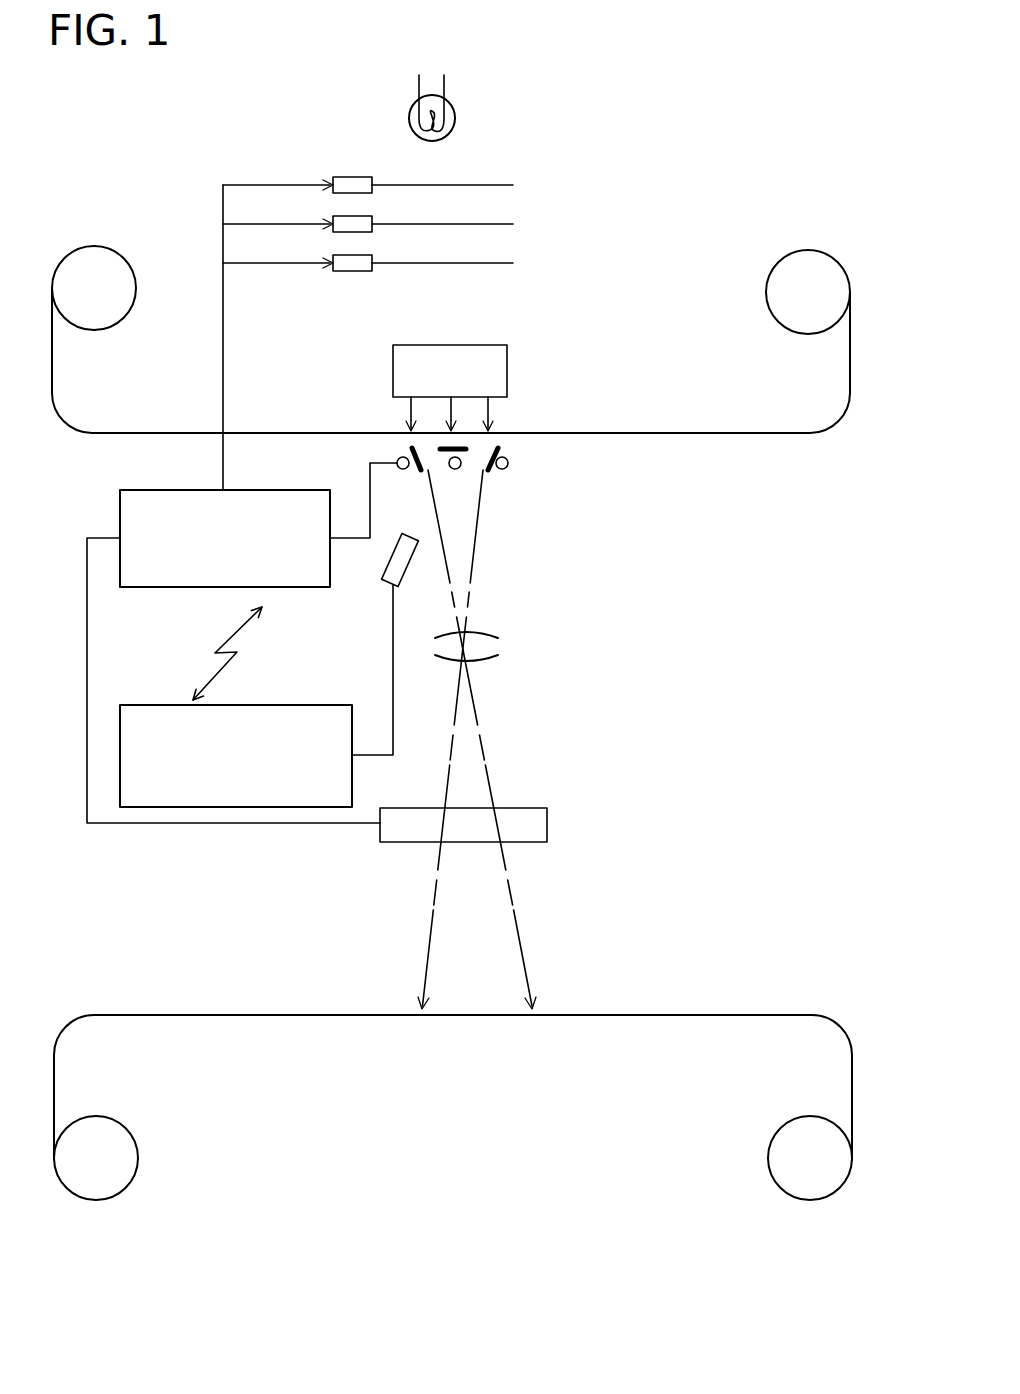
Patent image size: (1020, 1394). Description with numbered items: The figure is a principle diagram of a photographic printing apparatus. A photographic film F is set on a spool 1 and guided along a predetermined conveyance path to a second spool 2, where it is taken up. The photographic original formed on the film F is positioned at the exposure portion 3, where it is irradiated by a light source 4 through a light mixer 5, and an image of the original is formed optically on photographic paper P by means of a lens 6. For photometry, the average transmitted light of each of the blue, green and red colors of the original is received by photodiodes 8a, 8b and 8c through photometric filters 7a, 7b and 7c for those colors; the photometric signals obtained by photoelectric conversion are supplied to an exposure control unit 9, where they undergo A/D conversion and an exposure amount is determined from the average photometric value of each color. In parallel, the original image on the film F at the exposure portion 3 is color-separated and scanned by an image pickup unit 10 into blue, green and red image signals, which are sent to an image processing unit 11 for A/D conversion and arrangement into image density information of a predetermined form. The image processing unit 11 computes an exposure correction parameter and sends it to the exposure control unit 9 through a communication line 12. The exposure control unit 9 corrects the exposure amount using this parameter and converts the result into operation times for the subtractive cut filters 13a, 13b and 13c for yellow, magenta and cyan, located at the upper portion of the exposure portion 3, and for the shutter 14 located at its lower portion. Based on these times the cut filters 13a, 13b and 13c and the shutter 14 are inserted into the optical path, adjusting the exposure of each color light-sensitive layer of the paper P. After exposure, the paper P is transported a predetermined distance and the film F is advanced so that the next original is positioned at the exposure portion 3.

The spool 1 is at (118, 306).
The second spool 2 is at (792, 307).
The exposure portion 3 is at (514, 421).
The light source 4 is at (470, 128).
The light mixer 5 is at (493, 370).
The lens 6 is at (518, 652).
The photometric filter 7a is at (500, 450).
The photometric filter 7b is at (465, 453).
The photometric filter 7c is at (409, 447).
The photodiode 8a is at (506, 468).
The photodiode 8b is at (454, 470).
The photodiode 8c is at (400, 470).
The exposure control unit 9 is at (120, 517).
The image pickup unit 10 is at (391, 553).
The image processing unit 11 is at (135, 704).
The communication line 12 is at (223, 675).
The subtractive cut filter 13a is at (498, 185).
The subtractive cut filter 13b is at (495, 225).
The subtractive cut filter 13c is at (490, 263).
The shutter 14 is at (547, 823).
The photographic film F is at (180, 420).
The photographic paper P is at (696, 1004).